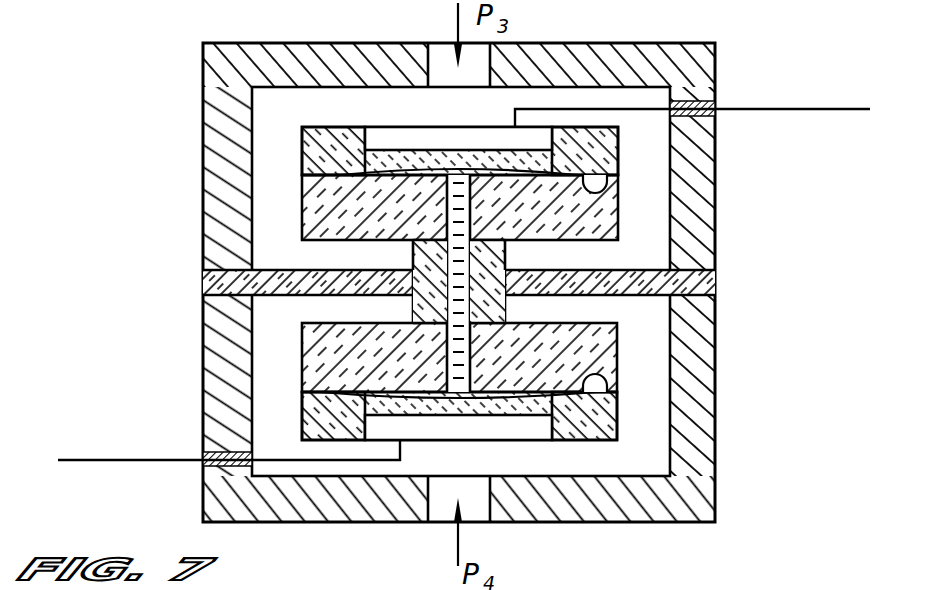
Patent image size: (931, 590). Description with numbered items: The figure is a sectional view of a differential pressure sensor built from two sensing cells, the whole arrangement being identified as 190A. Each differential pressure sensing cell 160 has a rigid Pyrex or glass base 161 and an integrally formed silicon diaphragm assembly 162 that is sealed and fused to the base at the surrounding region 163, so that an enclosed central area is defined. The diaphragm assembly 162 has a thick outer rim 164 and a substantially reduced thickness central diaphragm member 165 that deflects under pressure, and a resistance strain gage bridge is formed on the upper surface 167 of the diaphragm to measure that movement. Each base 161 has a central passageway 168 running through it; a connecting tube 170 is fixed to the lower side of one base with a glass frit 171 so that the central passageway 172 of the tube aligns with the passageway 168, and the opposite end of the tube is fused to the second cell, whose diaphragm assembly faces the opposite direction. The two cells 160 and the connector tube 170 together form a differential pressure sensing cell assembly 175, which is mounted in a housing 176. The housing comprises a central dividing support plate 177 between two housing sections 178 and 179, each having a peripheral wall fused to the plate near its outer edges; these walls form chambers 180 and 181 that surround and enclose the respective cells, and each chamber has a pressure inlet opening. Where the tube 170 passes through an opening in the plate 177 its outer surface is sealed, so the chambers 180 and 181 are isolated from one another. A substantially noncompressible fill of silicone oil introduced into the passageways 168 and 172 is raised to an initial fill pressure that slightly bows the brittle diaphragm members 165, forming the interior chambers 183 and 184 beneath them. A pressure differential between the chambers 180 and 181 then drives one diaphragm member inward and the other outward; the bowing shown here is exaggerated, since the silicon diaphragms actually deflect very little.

The differential pressure sensing cell 160 is at (278, 139).
The base 161 is at (318, 207).
The diaphragm assembly 162 is at (320, 104).
The sealing region 163 is at (632, 192).
The outer rim 164 is at (588, 142).
The central diaphragm member 165 is at (432, 162).
The upper surface of the diaphragm 167 is at (437, 163).
The central passageway 168 is at (520, 200).
The connecting tube 170 is at (420, 258).
The glass frit 171 is at (495, 232).
The central passageway of the tube 172 is at (498, 307).
The differential pressure sensing cell assembly 175 is at (263, 367).
The housing 176 is at (703, 410).
The support plate 177 is at (650, 272).
The housing section 178 is at (706, 138).
The housing section 179 is at (717, 457).
The chamber 180 is at (652, 208).
The chamber 181 is at (657, 362).
The interior chamber 183 is at (462, 170).
The interior chamber 184 is at (433, 393).
The valve assembly 190A is at (578, 578).